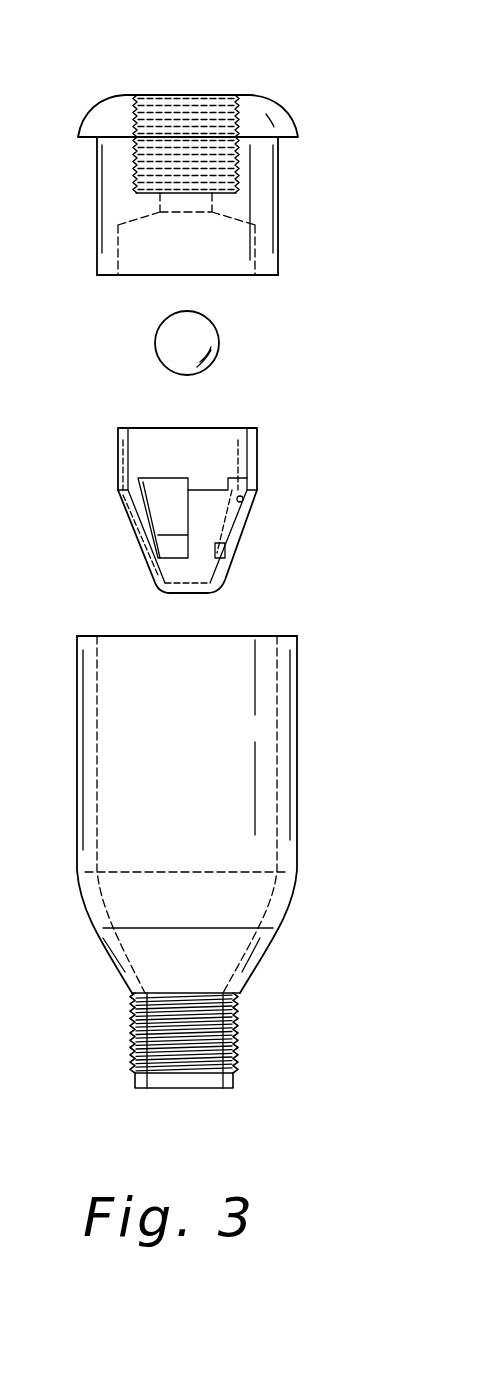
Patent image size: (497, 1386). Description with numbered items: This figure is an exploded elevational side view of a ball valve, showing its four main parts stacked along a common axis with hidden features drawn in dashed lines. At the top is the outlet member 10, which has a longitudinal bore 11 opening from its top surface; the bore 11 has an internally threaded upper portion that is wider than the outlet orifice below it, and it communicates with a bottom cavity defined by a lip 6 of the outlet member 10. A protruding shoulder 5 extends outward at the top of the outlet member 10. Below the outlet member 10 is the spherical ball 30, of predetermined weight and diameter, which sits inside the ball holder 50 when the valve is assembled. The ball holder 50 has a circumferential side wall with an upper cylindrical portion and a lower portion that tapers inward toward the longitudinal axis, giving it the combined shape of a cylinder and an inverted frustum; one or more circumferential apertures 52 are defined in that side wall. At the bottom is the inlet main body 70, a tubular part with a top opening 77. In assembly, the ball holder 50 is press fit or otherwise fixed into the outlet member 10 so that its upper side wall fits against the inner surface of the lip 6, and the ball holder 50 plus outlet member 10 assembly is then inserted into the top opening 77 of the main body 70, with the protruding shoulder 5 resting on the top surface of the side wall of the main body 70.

The protruding shoulder 5 is at (283, 124).
The lip 6 is at (265, 272).
The outlet member 10 is at (220, 178).
The longitudinal bore 11 is at (222, 97).
The ball 30 is at (157, 349).
The ball holder 50 is at (227, 497).
The circumferential aperture 52 is at (245, 502).
The main body 70 is at (227, 824).
The top opening 77 is at (293, 636).